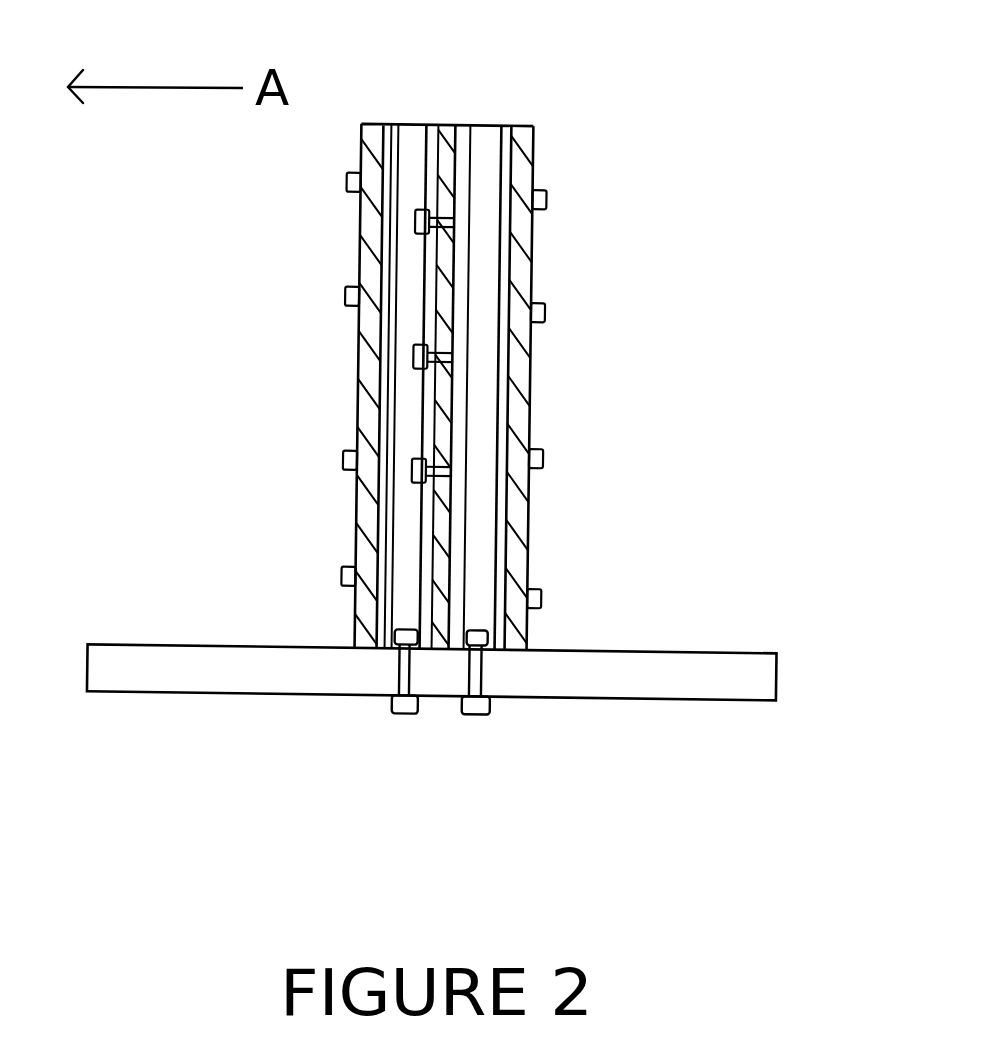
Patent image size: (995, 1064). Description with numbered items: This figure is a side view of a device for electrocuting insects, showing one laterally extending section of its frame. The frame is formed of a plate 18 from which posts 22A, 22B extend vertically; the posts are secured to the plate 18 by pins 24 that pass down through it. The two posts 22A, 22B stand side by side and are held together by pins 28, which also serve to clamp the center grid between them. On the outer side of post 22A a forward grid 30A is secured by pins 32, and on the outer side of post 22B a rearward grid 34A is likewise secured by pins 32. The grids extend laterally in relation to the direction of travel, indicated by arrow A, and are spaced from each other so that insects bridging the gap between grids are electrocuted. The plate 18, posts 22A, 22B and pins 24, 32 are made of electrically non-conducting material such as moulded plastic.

The plate 18 is at (723, 687).
The post 22A is at (418, 145).
The post 22B is at (484, 142).
The pins 24 is at (402, 718).
The pins 28 is at (416, 228).
The forward grid 30A is at (358, 376).
The pins 32 is at (345, 460).
The rearward grid 34A is at (534, 262).